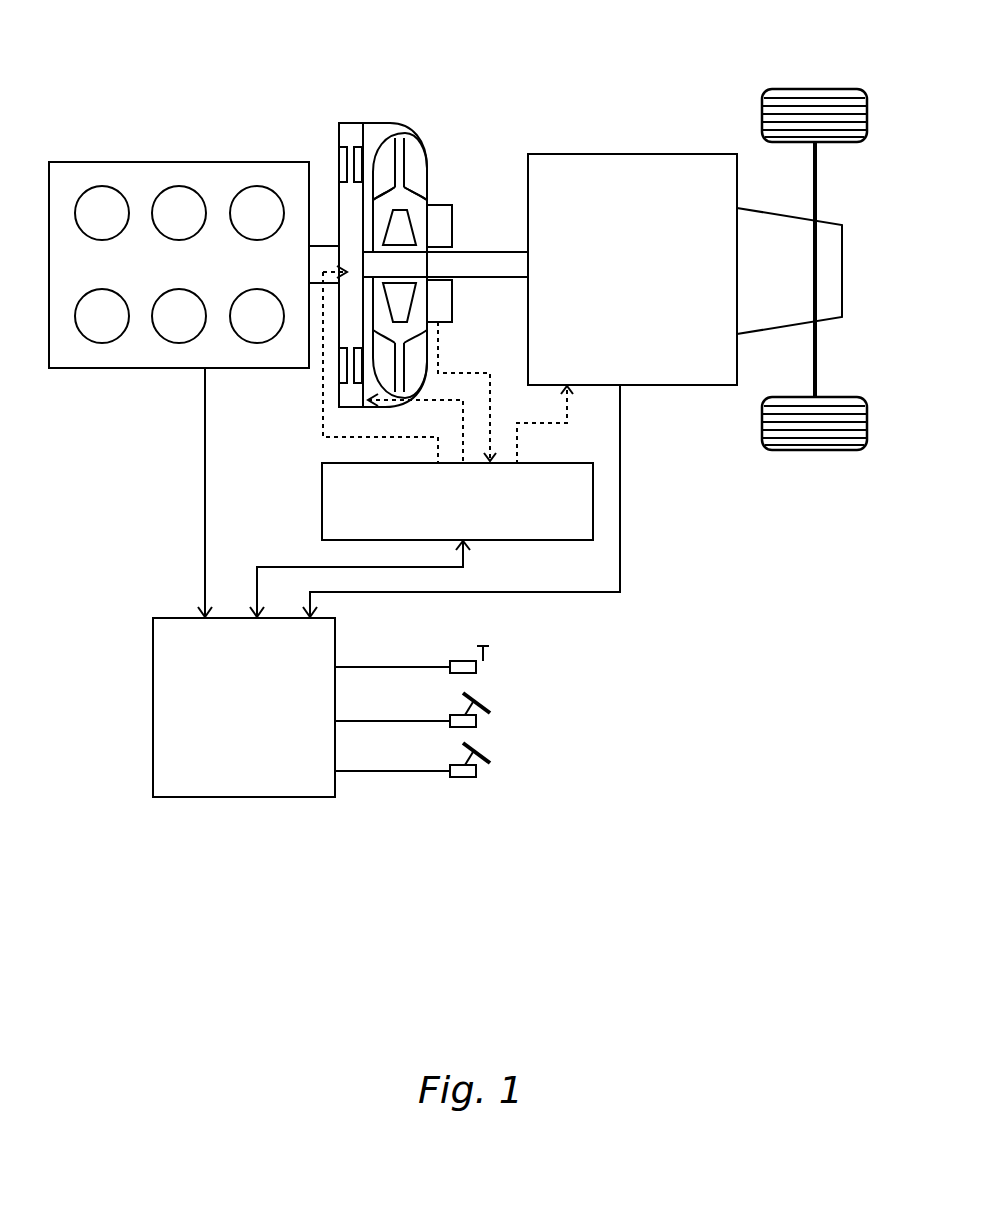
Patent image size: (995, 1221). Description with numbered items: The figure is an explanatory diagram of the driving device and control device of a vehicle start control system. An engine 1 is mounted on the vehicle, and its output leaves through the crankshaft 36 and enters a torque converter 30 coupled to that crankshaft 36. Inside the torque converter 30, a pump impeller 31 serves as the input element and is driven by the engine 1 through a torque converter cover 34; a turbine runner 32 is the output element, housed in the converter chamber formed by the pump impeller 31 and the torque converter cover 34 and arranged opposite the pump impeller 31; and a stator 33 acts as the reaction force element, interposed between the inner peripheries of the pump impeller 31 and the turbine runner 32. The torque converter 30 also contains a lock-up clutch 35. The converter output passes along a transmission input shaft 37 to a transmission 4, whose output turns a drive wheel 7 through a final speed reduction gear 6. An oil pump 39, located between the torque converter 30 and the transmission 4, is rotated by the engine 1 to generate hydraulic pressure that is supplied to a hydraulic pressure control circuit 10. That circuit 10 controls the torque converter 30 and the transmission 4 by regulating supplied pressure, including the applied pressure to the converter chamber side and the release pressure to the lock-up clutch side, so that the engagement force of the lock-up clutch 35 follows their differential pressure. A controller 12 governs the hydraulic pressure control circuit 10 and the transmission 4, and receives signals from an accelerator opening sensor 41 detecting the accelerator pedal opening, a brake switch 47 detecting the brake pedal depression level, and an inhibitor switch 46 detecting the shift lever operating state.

The engine 1 is at (258, 162).
The transmission 4 is at (605, 154).
The final speed reduction gear 6 is at (760, 208).
The drive wheel 7 is at (818, 88).
The hydraulic pressure control circuit 10 is at (322, 492).
The controller 12 is at (178, 617).
The torque converter 30 is at (400, 207).
The pump impeller 31 is at (423, 168).
The turbine runner 32 is at (393, 138).
The stator 33 is at (408, 210).
The torque converter cover 34 is at (372, 123).
The lock-up clutch 35 is at (348, 147).
The crankshaft 36 is at (323, 243).
The transmission input shaft 37 is at (508, 283).
The oil pump 39 is at (452, 300).
The accelerator opening sensor 41 is at (476, 722).
The inhibitor switch 46 is at (466, 661).
The brake switch 47 is at (476, 772).